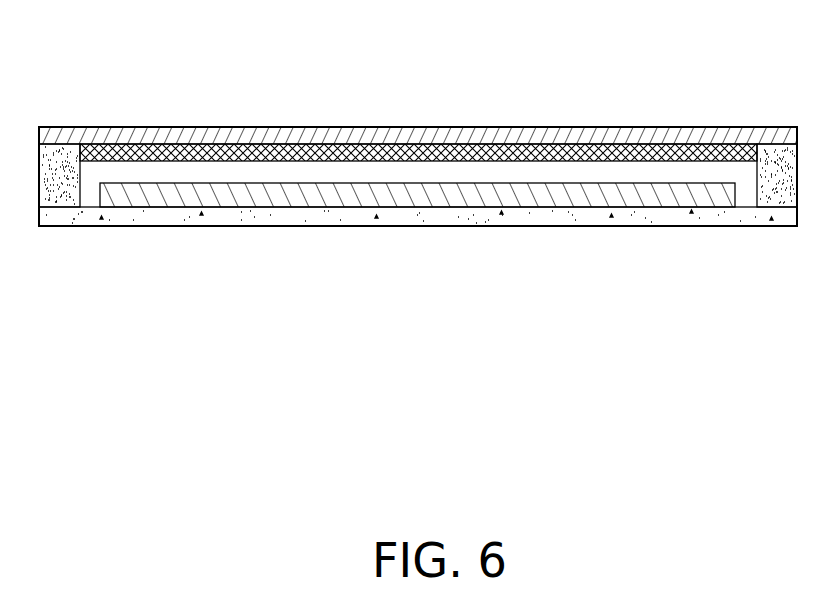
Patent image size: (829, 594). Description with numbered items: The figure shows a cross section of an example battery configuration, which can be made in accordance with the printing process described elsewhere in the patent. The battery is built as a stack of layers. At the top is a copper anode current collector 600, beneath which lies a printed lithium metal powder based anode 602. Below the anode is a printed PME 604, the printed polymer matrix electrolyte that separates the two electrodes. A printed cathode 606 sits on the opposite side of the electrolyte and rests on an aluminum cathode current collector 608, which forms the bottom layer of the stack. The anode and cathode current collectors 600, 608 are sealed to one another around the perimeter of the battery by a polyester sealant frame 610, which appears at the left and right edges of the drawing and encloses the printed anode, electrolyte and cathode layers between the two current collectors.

The copper anode current collector 600 is at (130, 127).
The printed lithium metal powder based anode 602 is at (683, 153).
The printed PME 604 is at (743, 175).
The printed cathode 606 is at (182, 195).
The aluminum cathode current collector 608 is at (687, 215).
The polyester sealant frame 610 is at (43, 175).